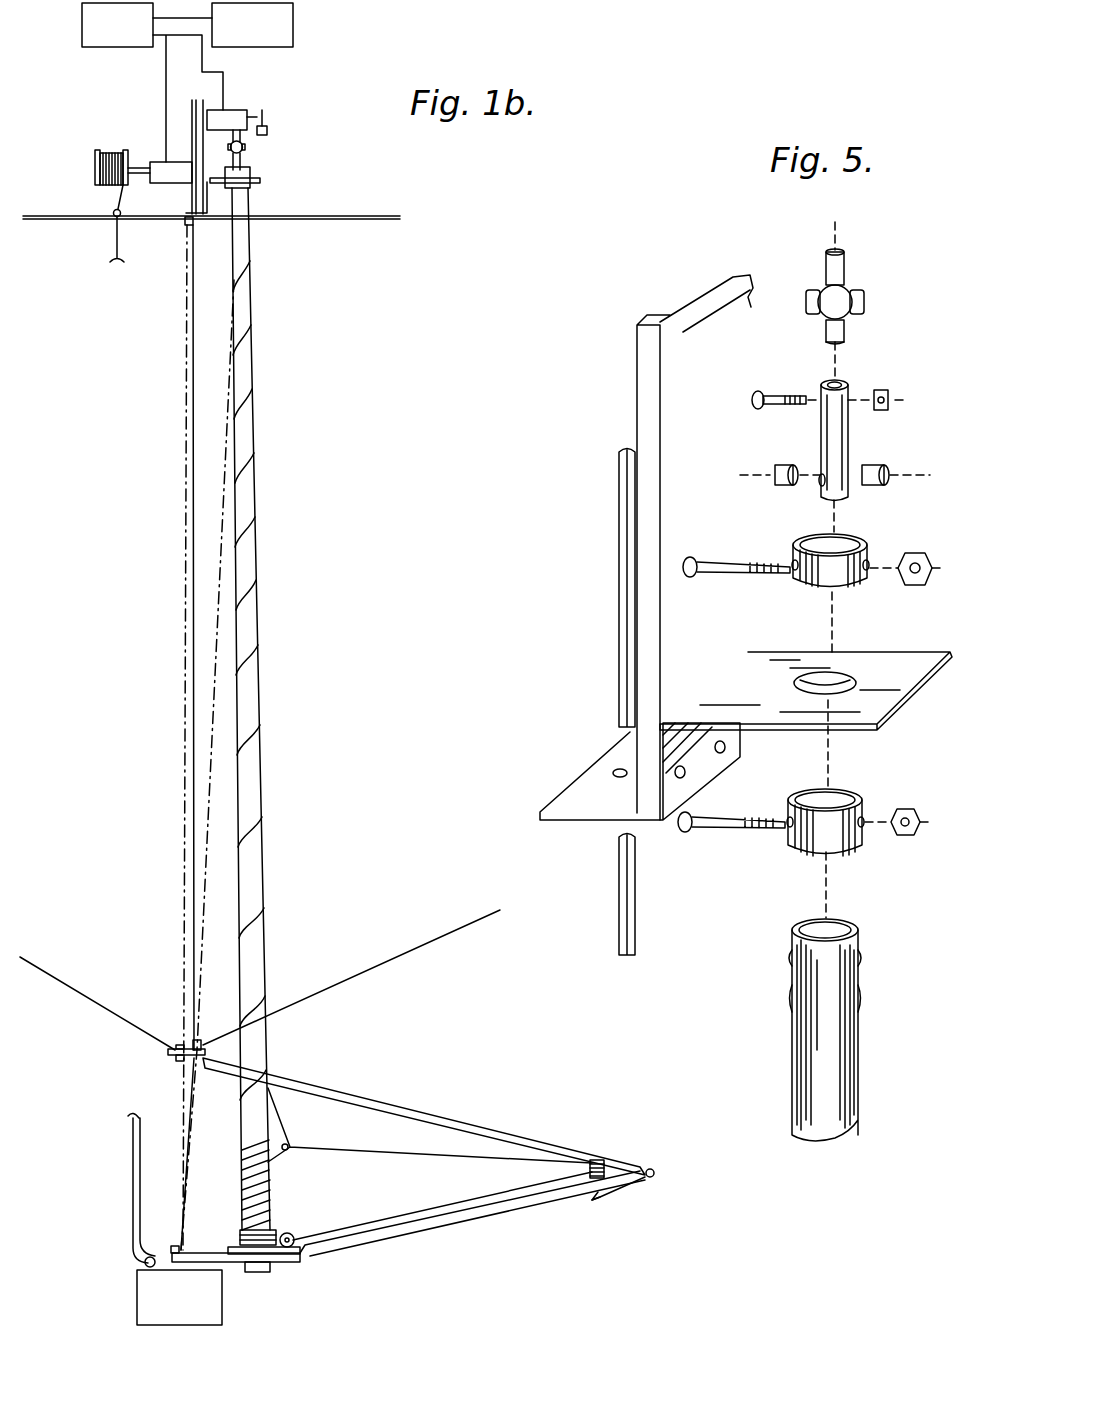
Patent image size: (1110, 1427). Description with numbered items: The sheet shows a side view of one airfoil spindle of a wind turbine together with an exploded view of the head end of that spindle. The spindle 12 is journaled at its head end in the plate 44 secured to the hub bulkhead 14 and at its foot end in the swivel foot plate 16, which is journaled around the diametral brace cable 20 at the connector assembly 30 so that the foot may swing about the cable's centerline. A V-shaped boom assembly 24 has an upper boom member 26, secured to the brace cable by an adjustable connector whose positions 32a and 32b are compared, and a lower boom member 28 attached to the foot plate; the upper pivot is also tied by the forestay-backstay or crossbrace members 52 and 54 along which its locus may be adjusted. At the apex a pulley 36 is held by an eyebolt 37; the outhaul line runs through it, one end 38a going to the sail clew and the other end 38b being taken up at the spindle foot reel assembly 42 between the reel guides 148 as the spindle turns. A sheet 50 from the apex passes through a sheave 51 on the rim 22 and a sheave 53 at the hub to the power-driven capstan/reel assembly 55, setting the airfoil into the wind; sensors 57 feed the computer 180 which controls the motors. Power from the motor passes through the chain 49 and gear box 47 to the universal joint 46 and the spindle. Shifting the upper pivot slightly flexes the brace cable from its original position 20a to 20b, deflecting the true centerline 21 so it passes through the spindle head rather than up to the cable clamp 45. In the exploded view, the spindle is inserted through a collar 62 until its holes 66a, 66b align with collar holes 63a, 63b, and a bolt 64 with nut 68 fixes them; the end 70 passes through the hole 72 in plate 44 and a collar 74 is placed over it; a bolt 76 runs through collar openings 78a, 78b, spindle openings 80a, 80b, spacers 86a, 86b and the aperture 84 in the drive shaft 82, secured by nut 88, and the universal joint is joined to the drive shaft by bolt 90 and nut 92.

In FIG. 1b, the spindle 12 is at (250, 204).
In FIG. 5, the spindle 12 is at (847, 1100).
In FIG. 1b, the hub bulkhead 14 is at (193, 193).
In FIG. 5, the hub bulkhead 14 is at (635, 407).
In FIG. 1b, the foot plate 16 is at (300, 1264).
In FIG. 5, the diametral brace cable 20 is at (636, 926).
In FIG. 1b, the original position of brace cable 20a is at (184, 512).
In FIG. 1b, the flexed position of brace cable 20b is at (190, 634).
In FIG. 1b, the true centerline 21 is at (222, 562).
In FIG. 1b, the rim 22 is at (215, 1325).
In FIG. 1b, the boom assembly 24 is at (424, 1164).
In FIG. 1b, the upper boom member 26 is at (405, 1100).
In FIG. 1b, the lower boom member 28 is at (482, 1222).
In FIG. 1b, the connector assembly 30 is at (172, 1242).
In FIG. 1b, the connector position 32a is at (178, 1048).
In FIG. 1b, the connector position 32b is at (200, 1042).
In FIG. 1b, the pulley 36 is at (600, 1160).
In FIG. 1b, the eyebolt 37 is at (655, 1168).
In FIG. 1b, the outhaul line end 38a is at (345, 1150).
In FIG. 1b, the outhaul line end 38b is at (372, 1222).
In FIG. 1b, the spindle foot reel assembly 42 is at (287, 1231).
In FIG. 1b, the plate 44 is at (262, 180).
In FIG. 5, the plate 44 is at (910, 680).
In FIG. 1b, the clamp 45 is at (191, 227).
In FIG. 1b, the universal joint 46 is at (250, 151).
In FIG. 5, the universal joint 46 is at (843, 255).
In FIG. 1b, the gear box 47 is at (236, 112).
In FIG. 1b, the chain 49 is at (270, 130).
In FIG. 1b, the sheet 50 is at (112, 255).
In FIG. 1b, the sheave 51 is at (145, 1265).
In FIG. 1b, the guy wire 52 is at (60, 978).
In FIG. 1b, the sheave 53 is at (113, 211).
In FIG. 1b, the guy wire 54 is at (398, 955).
In FIG. 1b, the capstan/reel assembly 55 is at (158, 162).
In FIG. 1b, the sensors 57 is at (293, 30).
In FIG. 5, the collar 62 is at (845, 790).
In FIG. 5, the collar hole 63a is at (788, 830).
In FIG. 5, the collar hole 63b is at (864, 830).
In FIG. 5, the bolt 64 is at (742, 832).
In FIG. 5, the spindle hole 66a is at (790, 995).
In FIG. 5, the spindle hole 66b is at (860, 990).
In FIG. 5, the nut 68 is at (912, 840).
In FIG. 5, the spindle end 70 is at (858, 935).
In FIG. 5, the hole 72 is at (842, 673).
In FIG. 5, the collar 74 is at (855, 537).
In FIG. 5, the bolt 76 is at (710, 555).
In FIG. 5, the collar opening 78a is at (795, 560).
In FIG. 5, the collar opening 78b is at (870, 565).
In FIG. 5, the spindle opening 80a is at (790, 958).
In FIG. 5, the spindle opening 80b is at (862, 955).
In FIG. 5, the drive shaft 82 is at (848, 436).
In FIG. 5, the aperture 84 is at (818, 462).
In FIG. 5, the spacer 86a is at (782, 465).
In FIG. 5, the spacer 86b is at (890, 468).
In FIG. 5, the nut 88 is at (928, 585).
In FIG. 5, the bolt 90 is at (760, 395).
In FIG. 5, the nut 92 is at (887, 390).
In FIG. 1b, the reel guides 148 is at (233, 1226).
In FIG. 1b, the computer 180 is at (105, 48).